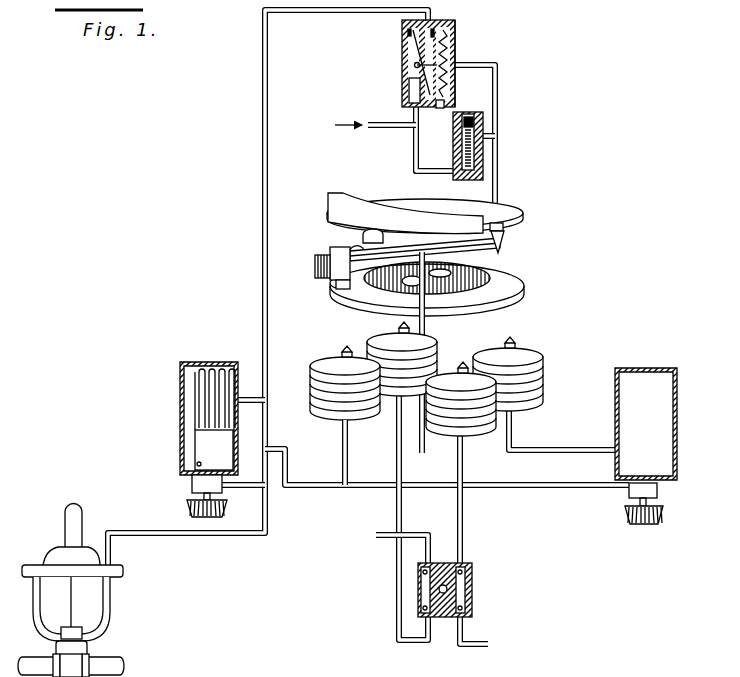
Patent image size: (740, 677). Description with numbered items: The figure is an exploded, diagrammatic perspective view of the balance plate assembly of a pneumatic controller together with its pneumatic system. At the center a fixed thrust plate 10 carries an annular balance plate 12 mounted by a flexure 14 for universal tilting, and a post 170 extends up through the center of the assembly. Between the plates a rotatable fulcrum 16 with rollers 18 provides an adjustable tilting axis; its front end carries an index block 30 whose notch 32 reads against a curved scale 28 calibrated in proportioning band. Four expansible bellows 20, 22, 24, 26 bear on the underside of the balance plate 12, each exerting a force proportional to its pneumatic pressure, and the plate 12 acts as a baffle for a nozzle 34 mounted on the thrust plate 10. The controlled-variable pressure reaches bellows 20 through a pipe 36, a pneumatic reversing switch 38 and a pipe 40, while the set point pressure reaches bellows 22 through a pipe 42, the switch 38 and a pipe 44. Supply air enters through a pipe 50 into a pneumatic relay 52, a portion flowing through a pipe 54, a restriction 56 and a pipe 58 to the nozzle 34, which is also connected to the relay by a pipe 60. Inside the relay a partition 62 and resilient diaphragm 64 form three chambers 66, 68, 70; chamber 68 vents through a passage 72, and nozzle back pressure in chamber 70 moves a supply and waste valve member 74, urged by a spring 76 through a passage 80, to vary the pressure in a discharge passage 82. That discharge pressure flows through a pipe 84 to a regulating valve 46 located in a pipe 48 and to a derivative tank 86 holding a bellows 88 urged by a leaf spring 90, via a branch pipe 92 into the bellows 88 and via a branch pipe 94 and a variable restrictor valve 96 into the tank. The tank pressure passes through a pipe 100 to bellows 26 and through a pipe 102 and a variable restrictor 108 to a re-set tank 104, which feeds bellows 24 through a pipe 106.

The thrust plate 10 is at (510, 217).
The balance plate 12 is at (503, 288).
The flexure 14 is at (469, 281).
The fulcrum 16 is at (507, 250).
The rollers 18 is at (350, 250).
The bellows 20 is at (447, 370).
The bellows 22 is at (387, 332).
The bellows 24 is at (527, 345).
The bellows 26 is at (325, 355).
The scale 28 is at (328, 205).
The index block 30 is at (315, 264).
The notch 32 is at (318, 248).
The nozzle 34 is at (503, 238).
The pipe 36 is at (477, 642).
The pneumatic reversing switch 38 is at (476, 565).
The pipe 40 is at (463, 507).
The pipe 42 is at (385, 537).
The pipe 44 is at (397, 465).
The regulating valve 46 is at (63, 570).
The pipe 48 is at (105, 663).
The pipe 50 is at (378, 128).
The pneumatic relay 52 is at (462, 20).
The pipe 54 is at (412, 155).
The restriction 56 is at (470, 113).
The pipe 58 is at (500, 163).
The pipe 60 is at (500, 97).
The partition 62 is at (427, 110).
The resilient diaphragm 64 is at (455, 53).
The chamber 66 is at (408, 33).
The chamber 68 is at (435, 28).
The chamber 70 is at (447, 38).
The passage 72 is at (434, 97).
The supply and waste valve member 74 is at (413, 65).
The spring 76 is at (413, 52).
The passage 80 is at (427, 77).
The discharge passage 82 is at (432, 28).
The pipe 84 is at (262, 140).
The derivative tank 86 is at (177, 362).
The bellows 88 is at (210, 367).
The leaf spring 90 is at (197, 445).
The branch pipe 92 is at (249, 398).
The branch pipe 94 is at (245, 487).
The variable restrictor valve 96 is at (188, 483).
The pipe 100 is at (303, 488).
The pipe 102 is at (555, 490).
The re-set tank 104 is at (679, 364).
The pipe 106 is at (555, 448).
The variable restrictor 108 is at (661, 492).
The post 170 is at (425, 443).